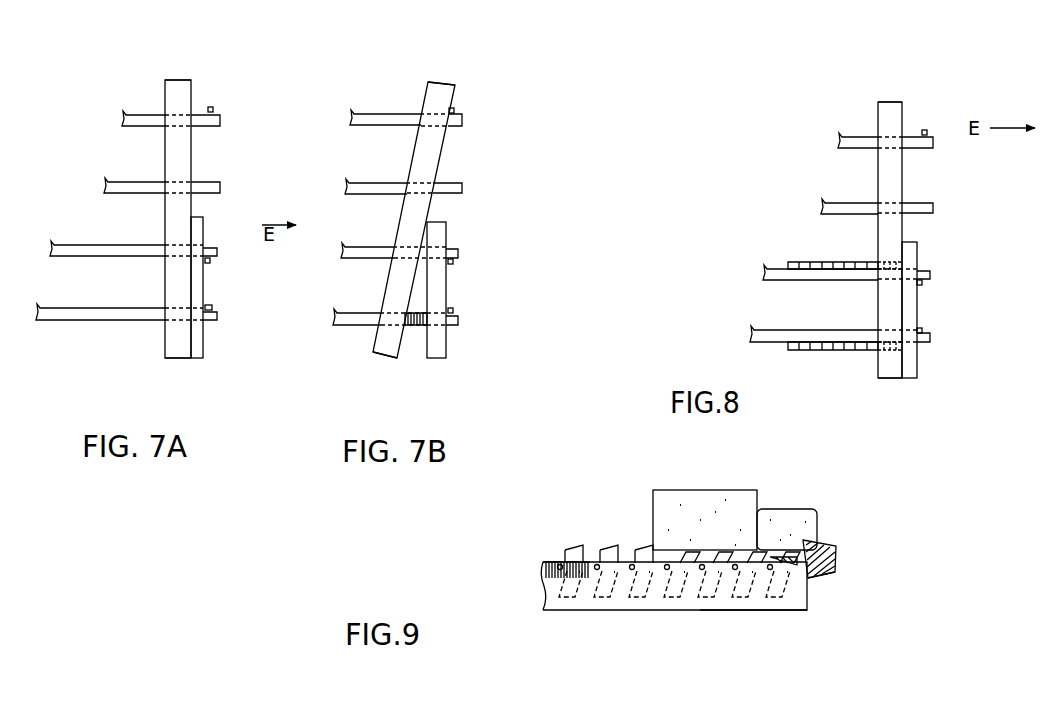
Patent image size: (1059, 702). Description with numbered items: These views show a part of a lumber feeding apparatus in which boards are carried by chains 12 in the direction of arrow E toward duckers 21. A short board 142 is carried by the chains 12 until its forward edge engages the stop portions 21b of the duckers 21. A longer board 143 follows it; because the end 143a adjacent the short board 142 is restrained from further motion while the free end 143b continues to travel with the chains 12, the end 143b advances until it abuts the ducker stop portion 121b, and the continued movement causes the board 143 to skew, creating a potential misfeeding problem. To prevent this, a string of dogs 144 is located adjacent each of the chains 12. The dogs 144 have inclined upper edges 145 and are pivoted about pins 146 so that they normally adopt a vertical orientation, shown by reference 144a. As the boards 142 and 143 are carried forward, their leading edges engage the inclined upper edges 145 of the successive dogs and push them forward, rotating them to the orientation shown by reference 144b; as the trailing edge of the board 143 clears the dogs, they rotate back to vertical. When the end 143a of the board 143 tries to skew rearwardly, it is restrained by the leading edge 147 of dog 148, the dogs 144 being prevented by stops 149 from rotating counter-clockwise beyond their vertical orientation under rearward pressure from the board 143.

In FIG. 7A, the chains 12 is at (147, 181).
In FIG. 8, the chains 12 is at (850, 280).
In FIG. 9, the duckers 21 is at (818, 578).
In FIG. 7A, the stop portions 21b is at (209, 306).
In FIG. 7B, the stop portions 21b is at (452, 308).
In FIG. 8, the stop portions 21b is at (920, 328).
In FIG. 9, the stop portions 21b is at (830, 540).
In FIG. 7A, the ducker stop portion 121b is at (214, 108).
In FIG. 7B, the ducker stop portion 121b is at (456, 111).
In FIG. 7A, the short board 142 is at (203, 343).
In FIG. 7B, the short board 142 is at (446, 344).
In FIG. 8, the short board 142 is at (917, 364).
In FIG. 9, the short board 142 is at (797, 509).
In FIG. 7A, the longer board 143 is at (191, 175).
In FIG. 7B, the longer board 143 is at (442, 172).
In FIG. 8, the longer board 143 is at (903, 187).
In FIG. 9, the longer board 143 is at (712, 479).
In FIG. 7A, the end adjacent the board 142 143a is at (177, 358).
In FIG. 7B, the end adjacent the board 142 143a is at (388, 357).
In FIG. 8, the end adjacent the board 142 143a is at (890, 378).
In FIG. 7A, the free end 143b is at (185, 68).
In FIG. 7B, the free end 143b is at (470, 72).
In FIG. 8, the free end 143b is at (888, 102).
In FIG. 8, the dogs 144 is at (826, 262).
In FIG. 9, the dogs 144 is at (668, 613).
In FIG. 9, the vertical orientation of dogs 144a is at (551, 559).
In FIG. 9, the rotated orientation of dogs 144b is at (758, 592).
In FIG. 9, the inclined upper edges 145 is at (600, 549).
In FIG. 9, the pins 146 is at (575, 571).
In FIG. 9, the leading edge 147 is at (640, 550).
In FIG. 9, the dog 148 is at (640, 612).
In FIG. 9, the stops 149 is at (597, 571).